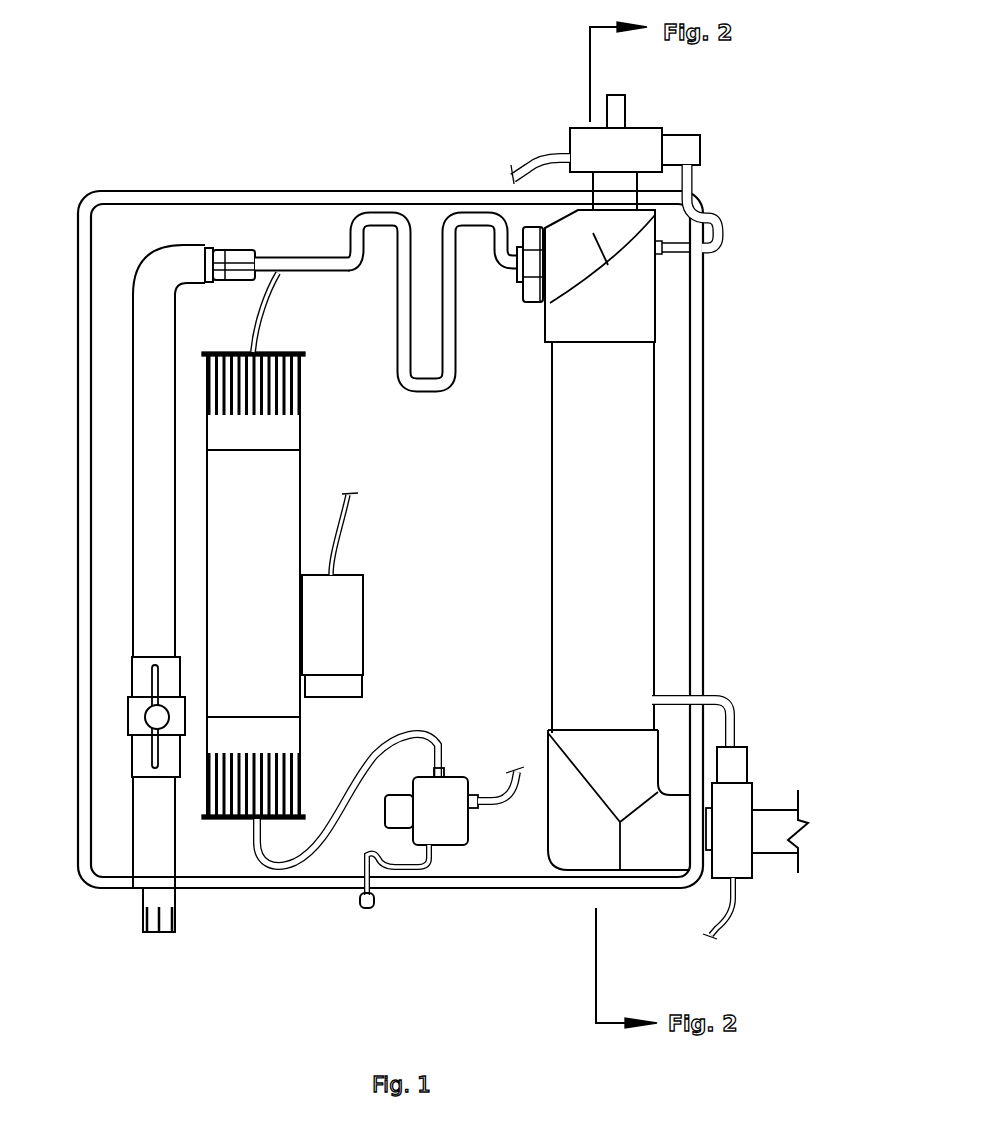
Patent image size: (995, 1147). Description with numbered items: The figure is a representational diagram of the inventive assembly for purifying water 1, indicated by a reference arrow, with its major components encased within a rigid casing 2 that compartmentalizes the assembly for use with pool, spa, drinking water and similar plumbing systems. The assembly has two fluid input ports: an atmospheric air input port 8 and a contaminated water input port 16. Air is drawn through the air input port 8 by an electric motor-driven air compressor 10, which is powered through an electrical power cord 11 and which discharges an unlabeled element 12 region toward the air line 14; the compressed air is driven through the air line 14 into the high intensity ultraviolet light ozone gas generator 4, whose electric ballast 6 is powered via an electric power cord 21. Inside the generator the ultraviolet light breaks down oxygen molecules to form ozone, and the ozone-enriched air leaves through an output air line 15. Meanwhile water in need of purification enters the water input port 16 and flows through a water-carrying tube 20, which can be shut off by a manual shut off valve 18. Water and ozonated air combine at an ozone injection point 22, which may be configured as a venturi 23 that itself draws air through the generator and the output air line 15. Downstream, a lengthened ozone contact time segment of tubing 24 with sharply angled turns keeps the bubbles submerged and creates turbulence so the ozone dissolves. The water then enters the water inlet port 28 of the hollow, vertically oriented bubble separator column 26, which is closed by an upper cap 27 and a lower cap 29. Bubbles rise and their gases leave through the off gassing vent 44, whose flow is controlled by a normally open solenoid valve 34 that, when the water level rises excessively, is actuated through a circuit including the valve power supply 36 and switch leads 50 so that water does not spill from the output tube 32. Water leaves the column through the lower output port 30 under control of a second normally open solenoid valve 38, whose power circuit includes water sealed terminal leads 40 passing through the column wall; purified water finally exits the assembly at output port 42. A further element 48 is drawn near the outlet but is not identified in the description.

The assembly for purifying water 1 is at (163, 168).
The rigid casing 2 is at (697, 443).
The high intensity ultraviolet light ozone gas generator 4 is at (253, 487).
The electric ballast 6 is at (340, 635).
The atmospheric air input port 8 is at (367, 900).
The air compressor 10 is at (447, 817).
The electrical power cord 11 is at (477, 808).
The pump drain tube 12 is at (423, 872).
The air line 14 is at (287, 860).
The output air line 15 is at (267, 310).
The contaminated water input port 16 is at (162, 933).
The manual shut off valve 18 is at (133, 720).
The water-carrying tube 20 is at (157, 585).
The electric power cord 21 is at (348, 535).
The ozone injection point 22 is at (290, 257).
The venturi 23 is at (321, 262).
The ozone contact time segment of tubing 24 is at (405, 245).
The bubble separator column 26 is at (603, 538).
The upper cap 27 is at (615, 297).
The water inlet port 28 is at (515, 247).
The lower cap 29 is at (577, 835).
The output port 30 is at (705, 850).
The output tube 32 is at (613, 110).
The solenoid valve 34 is at (690, 152).
The valve power supply 36 is at (547, 148).
The solenoid valve 38 is at (738, 768).
The water sealed terminal leads 40 is at (722, 700).
The output port 42 is at (770, 827).
The off gassing vent 44 is at (607, 180).
The sensor cable 48 is at (733, 902).
The switch leads 50 is at (723, 213).